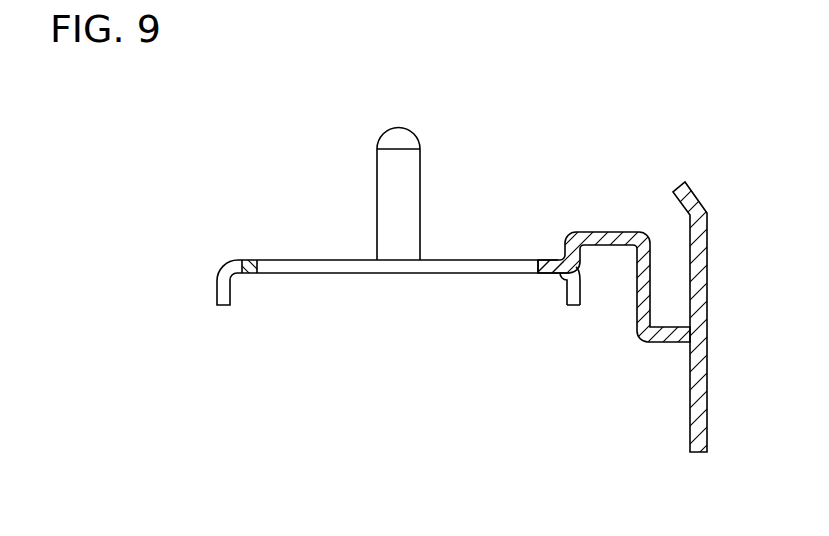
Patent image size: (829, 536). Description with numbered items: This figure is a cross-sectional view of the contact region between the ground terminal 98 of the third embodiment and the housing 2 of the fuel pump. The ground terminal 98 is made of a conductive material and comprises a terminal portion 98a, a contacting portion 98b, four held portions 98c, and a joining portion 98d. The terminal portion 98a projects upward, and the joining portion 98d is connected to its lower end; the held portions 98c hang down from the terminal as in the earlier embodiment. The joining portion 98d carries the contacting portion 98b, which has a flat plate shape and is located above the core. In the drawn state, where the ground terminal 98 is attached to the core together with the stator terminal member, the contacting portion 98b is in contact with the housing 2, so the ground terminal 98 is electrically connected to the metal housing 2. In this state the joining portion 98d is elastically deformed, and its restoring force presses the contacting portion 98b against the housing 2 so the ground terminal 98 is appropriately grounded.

The housing 2 is at (700, 308).
The ground terminal 98 is at (467, 155).
The terminal portion 98a is at (400, 153).
The contacting portion 98b is at (602, 238).
The held portions 98c is at (227, 287).
The joining portion 98d is at (401, 277).